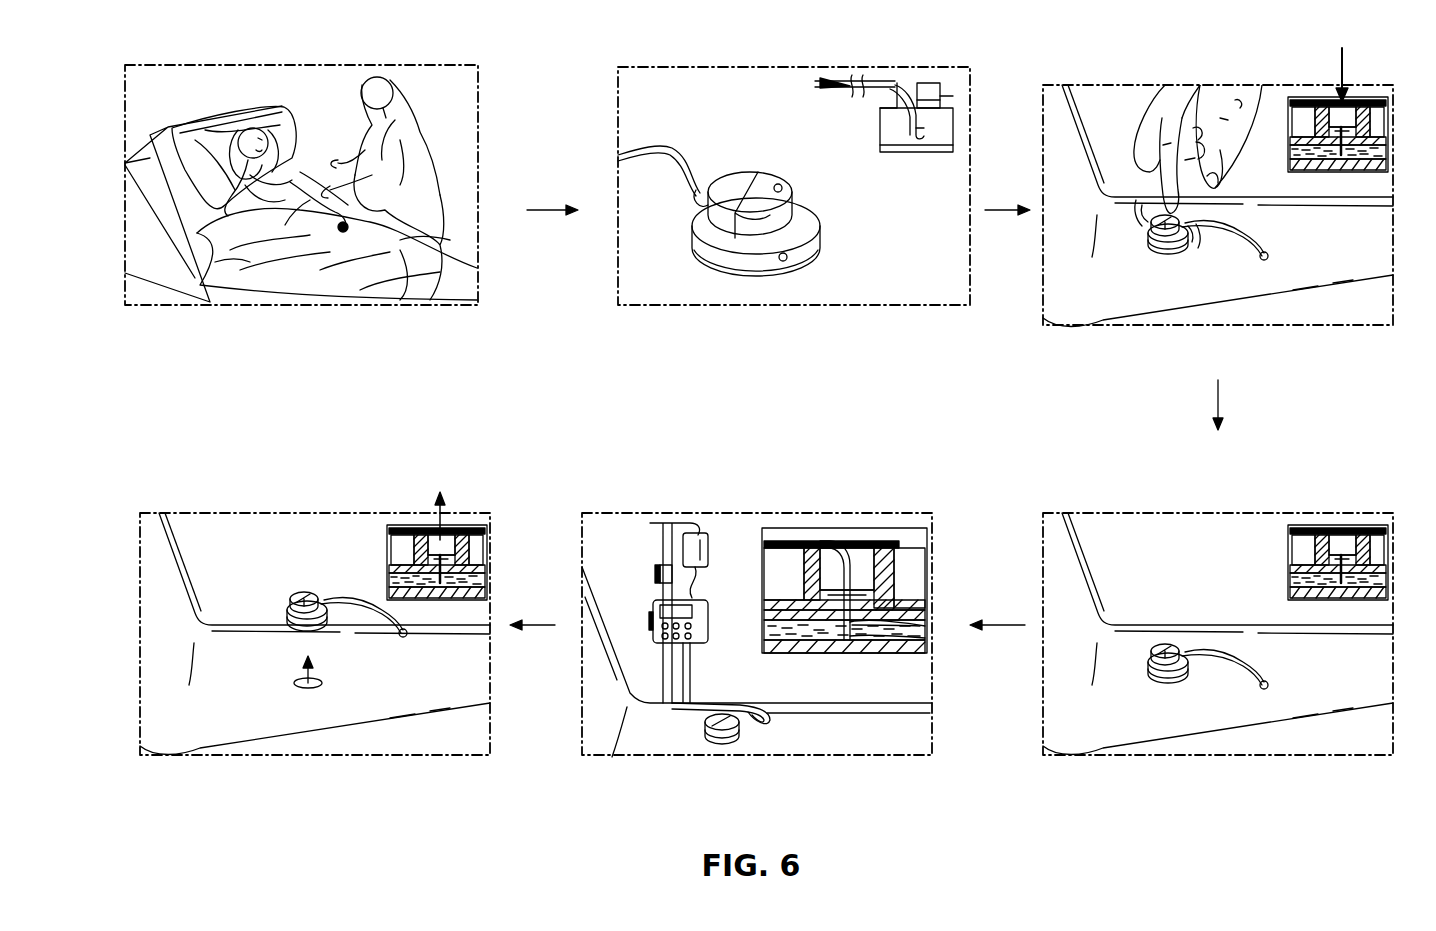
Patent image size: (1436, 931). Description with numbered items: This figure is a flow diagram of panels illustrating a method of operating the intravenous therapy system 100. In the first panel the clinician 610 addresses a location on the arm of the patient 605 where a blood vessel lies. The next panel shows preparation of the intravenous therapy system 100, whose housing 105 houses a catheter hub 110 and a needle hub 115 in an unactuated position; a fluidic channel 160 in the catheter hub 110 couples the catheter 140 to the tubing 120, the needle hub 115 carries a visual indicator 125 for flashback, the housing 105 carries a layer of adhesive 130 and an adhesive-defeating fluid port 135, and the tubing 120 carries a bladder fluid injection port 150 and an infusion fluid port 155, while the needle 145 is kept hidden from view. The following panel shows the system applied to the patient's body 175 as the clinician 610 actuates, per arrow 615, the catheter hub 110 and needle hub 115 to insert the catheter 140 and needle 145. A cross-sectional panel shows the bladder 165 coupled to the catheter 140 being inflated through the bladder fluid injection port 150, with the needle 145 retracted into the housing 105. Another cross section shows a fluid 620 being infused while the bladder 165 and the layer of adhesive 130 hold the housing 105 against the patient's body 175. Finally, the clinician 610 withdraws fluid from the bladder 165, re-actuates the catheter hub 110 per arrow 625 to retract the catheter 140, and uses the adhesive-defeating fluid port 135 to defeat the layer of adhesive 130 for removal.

The intravenous therapy system 100 is at (660, 74).
The housing 105 is at (720, 258).
The catheter hub 110 is at (712, 215).
The needle hub 115 is at (800, 214).
The tubing 120 is at (618, 158).
The visual indicator 125 is at (777, 184).
The layer of adhesive 130 is at (748, 278).
The adhesive-defeating fluid port 135 is at (795, 255).
The catheter 140 is at (930, 115).
The needle 145 is at (930, 135).
The bladder fluid injection port 150 is at (830, 82).
The infusion fluid port 155 is at (818, 85).
The fluidic channel 160 is at (928, 105).
The bladder 165 is at (828, 642).
The patient's body 175 is at (290, 232).
The patient 605 is at (235, 112).
The clinician 610 is at (440, 130).
The arrow 615 is at (1350, 62).
The fluid 620 is at (926, 623).
The arrow 625 is at (447, 510).